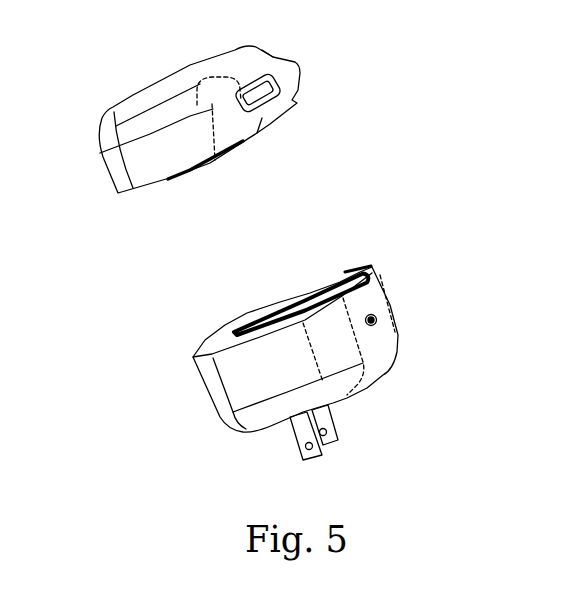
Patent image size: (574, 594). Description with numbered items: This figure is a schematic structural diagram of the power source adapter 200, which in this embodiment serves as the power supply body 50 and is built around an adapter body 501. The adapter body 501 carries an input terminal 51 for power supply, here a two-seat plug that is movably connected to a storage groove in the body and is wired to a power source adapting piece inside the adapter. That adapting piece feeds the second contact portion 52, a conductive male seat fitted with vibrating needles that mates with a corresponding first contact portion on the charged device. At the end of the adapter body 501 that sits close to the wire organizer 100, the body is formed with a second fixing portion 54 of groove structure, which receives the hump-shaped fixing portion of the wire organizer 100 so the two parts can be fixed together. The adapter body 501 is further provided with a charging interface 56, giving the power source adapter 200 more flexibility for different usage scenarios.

The power source adapter 200 is at (122, 53).
The wire organizer 100 is at (112, 178).
The power supply body 50 is at (143, 412).
The adapter body 501 is at (210, 398).
The input terminal 51 is at (340, 442).
The second contact portion 52 is at (358, 270).
The second fixing portion 54 is at (287, 315).
The charging interface 56 is at (378, 317).